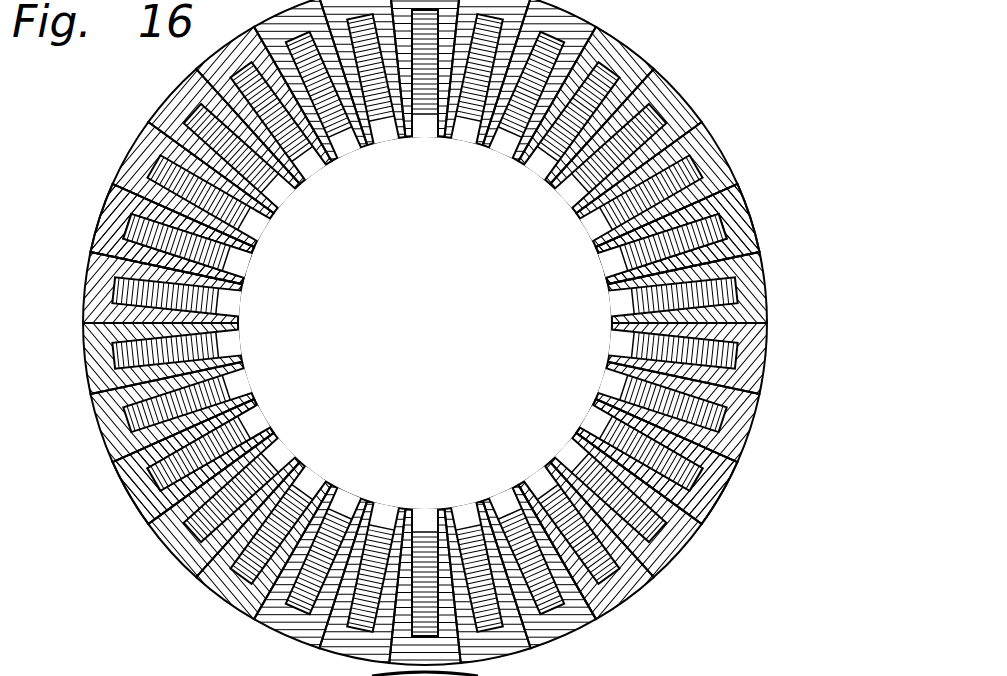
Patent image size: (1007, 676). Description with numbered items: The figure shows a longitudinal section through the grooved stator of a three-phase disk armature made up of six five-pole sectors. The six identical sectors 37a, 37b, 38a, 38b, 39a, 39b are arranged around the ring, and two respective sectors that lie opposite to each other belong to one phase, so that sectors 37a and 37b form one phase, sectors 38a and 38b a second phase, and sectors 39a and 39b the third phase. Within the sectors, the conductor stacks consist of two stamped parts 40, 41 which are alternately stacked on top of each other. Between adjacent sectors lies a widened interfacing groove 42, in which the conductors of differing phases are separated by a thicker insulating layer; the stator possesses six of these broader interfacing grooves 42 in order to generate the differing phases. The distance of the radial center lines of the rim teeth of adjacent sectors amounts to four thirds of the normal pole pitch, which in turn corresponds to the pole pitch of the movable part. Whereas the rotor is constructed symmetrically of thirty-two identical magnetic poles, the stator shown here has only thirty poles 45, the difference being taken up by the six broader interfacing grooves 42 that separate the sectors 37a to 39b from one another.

The sector 37a is at (238, 262).
The sector 37b is at (604, 424).
The sector 38a is at (382, 128).
The sector 38b is at (425, 514).
The sector 39a is at (610, 262).
The sector 39b is at (250, 413).
The stamped part 40 is at (107, 213).
The stamped part 41 is at (118, 470).
The interfacing groove 42 is at (584, 602).
The pole 45 is at (645, 519).